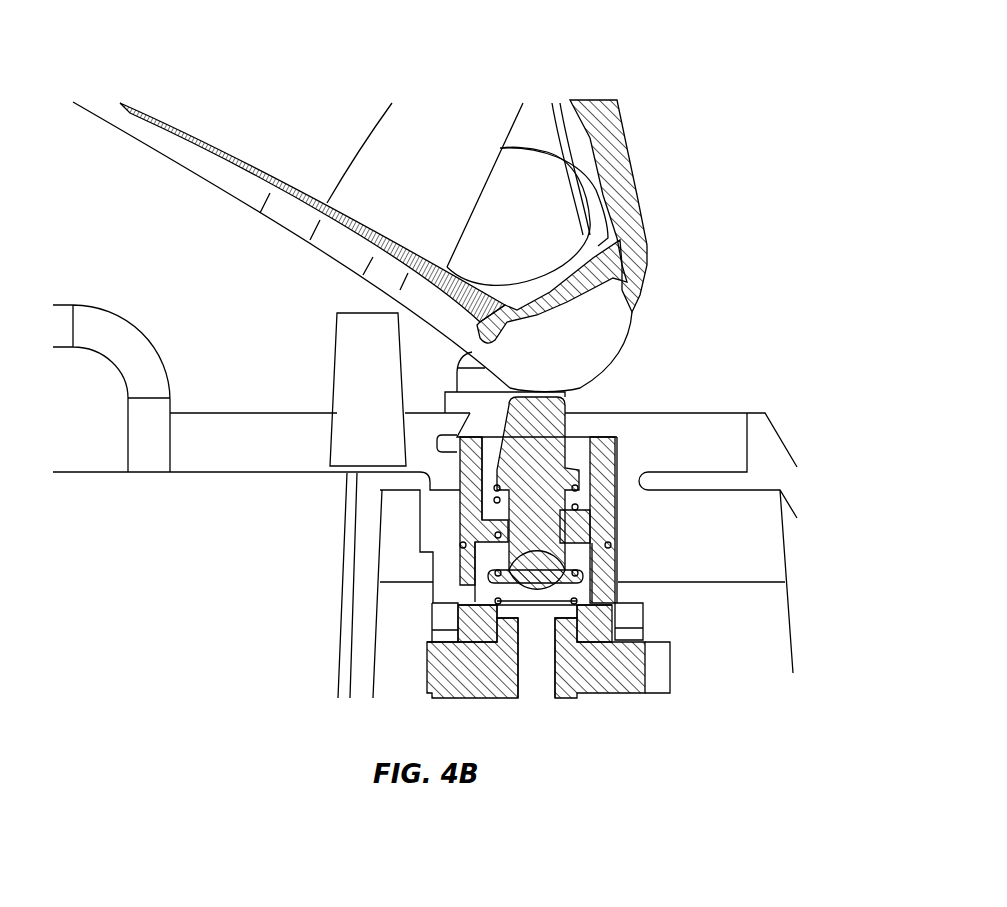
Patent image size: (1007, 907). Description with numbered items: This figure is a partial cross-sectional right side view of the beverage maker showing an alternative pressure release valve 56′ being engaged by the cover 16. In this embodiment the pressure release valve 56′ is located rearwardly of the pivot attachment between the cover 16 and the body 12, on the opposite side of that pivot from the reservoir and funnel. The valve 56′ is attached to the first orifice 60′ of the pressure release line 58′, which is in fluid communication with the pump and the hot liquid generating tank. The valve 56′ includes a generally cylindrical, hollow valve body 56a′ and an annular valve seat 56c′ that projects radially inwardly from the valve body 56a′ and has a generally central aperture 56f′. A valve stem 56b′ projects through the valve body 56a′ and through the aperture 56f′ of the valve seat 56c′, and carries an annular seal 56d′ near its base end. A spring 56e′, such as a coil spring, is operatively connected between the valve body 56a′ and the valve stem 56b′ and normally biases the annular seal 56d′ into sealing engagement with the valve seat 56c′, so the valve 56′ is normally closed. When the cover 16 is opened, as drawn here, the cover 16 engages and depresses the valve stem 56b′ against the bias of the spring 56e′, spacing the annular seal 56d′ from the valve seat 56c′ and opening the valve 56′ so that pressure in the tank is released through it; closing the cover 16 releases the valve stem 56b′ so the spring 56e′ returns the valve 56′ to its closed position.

The body 12 is at (792, 623).
The cover 16 is at (237, 206).
The pressure release valve 56′ is at (590, 497).
The valve body 56a′ is at (603, 467).
The valve stem 56b′ is at (560, 456).
The annular valve seat 56c′ is at (567, 528).
The annular seal 56d′ is at (583, 578).
The spring 56e′ is at (572, 505).
The aperture 56f′ is at (565, 557).
The pressure release line 58′ is at (615, 629).
The first orifice 60′ is at (597, 630).